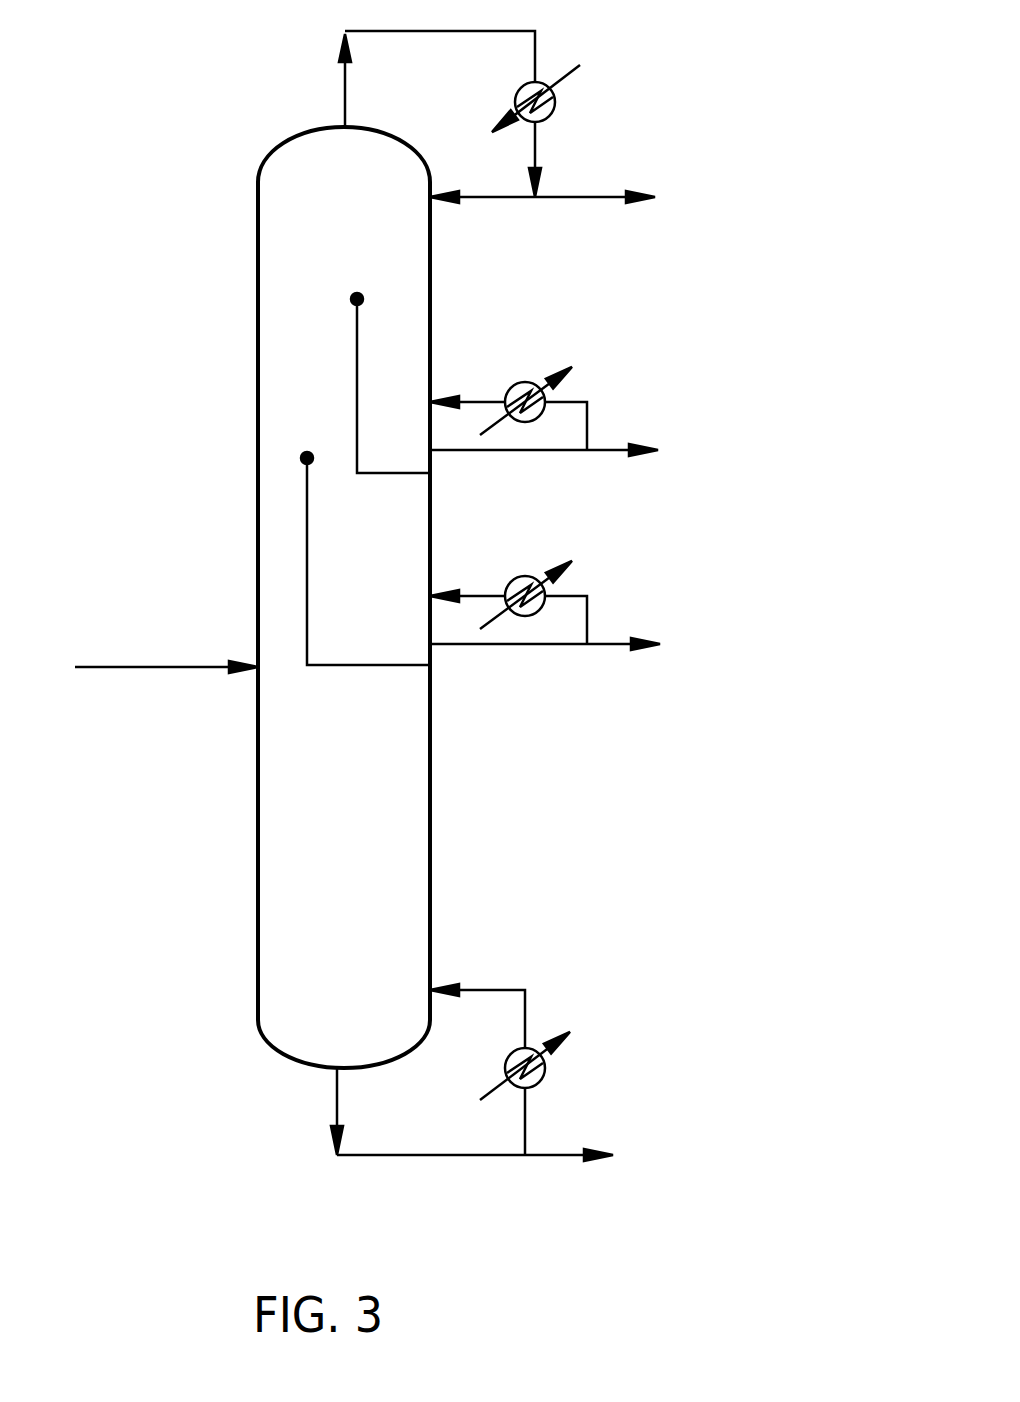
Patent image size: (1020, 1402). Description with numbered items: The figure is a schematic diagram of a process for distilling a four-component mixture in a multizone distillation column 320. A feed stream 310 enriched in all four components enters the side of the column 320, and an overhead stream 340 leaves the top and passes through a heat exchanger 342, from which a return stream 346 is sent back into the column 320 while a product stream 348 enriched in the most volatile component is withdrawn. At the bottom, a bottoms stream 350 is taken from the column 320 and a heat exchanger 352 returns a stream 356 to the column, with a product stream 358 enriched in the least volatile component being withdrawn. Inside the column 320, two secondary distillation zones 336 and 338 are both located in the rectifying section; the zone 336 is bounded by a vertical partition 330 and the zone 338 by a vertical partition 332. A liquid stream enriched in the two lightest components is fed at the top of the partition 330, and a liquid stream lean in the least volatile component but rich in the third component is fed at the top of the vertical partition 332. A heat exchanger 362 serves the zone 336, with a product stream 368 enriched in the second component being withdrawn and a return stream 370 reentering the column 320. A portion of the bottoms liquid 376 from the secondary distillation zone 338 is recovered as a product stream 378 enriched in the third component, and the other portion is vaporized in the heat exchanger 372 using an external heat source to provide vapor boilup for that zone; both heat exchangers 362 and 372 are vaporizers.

The feed stream ABCD 310 is at (167, 670).
The multizone distillation column 320 is at (258, 312).
The first partition wall 330 is at (355, 360).
The vertical partition 332 is at (307, 553).
The secondary distillation zone 336 is at (415, 397).
The secondary distillation zone 338 is at (390, 615).
The overhead vapor line 340 is at (345, 92).
The condenser 342 is at (567, 78).
The reflux line 346 is at (495, 200).
The product A line 348 is at (577, 196).
The bottoms line 350 is at (337, 1108).
The reboiler 352 is at (535, 1090).
The reboiler return line 356 is at (492, 988).
The product D line 358 is at (550, 1157).
The heat exchanger 362 is at (515, 380).
The product B line 368 is at (602, 452).
The side reflux line 370 is at (480, 594).
The heat exchanger 372 is at (525, 575).
The bottoms liquid 376 is at (538, 646).
The C-enriched product stream 378 is at (603, 646).